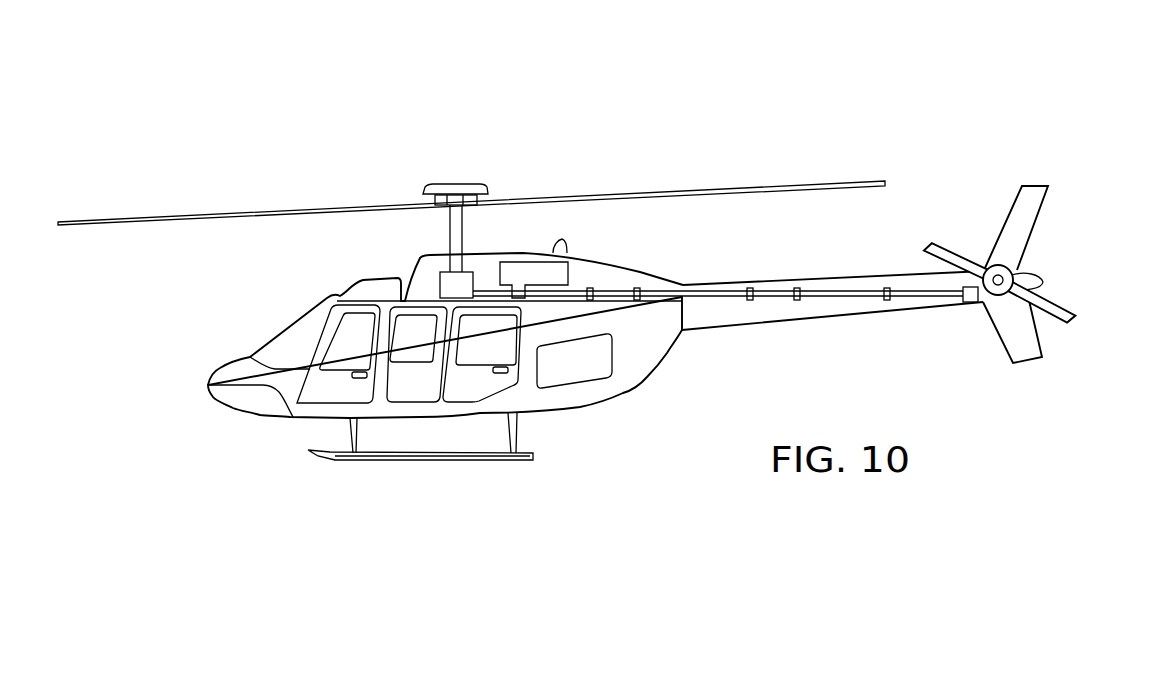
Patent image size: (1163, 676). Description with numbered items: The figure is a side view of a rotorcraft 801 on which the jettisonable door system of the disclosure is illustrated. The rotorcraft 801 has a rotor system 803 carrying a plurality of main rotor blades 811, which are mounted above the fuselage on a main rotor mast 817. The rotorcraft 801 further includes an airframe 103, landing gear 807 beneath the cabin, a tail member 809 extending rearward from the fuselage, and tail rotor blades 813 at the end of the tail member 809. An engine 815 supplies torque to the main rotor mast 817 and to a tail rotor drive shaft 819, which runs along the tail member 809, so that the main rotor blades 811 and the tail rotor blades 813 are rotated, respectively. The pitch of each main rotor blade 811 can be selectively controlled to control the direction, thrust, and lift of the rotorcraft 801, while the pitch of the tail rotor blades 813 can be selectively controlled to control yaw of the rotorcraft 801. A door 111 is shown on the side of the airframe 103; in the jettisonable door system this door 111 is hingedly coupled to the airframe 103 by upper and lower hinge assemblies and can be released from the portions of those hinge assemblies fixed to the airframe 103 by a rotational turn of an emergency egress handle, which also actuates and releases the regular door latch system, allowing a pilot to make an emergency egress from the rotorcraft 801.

The rotorcraft 801 is at (320, 104).
The rotor system 803 is at (477, 164).
The main rotor blades 811 is at (248, 208).
The main rotor mast 817 is at (450, 223).
The engine 815 is at (570, 273).
The tail rotor drive shaft 819 is at (777, 291).
The tail rotor blades 813 is at (1065, 304).
The tail member 809 is at (852, 320).
The airframe 103 is at (247, 415).
The door 111 is at (316, 398).
The landing gear 807 is at (480, 461).